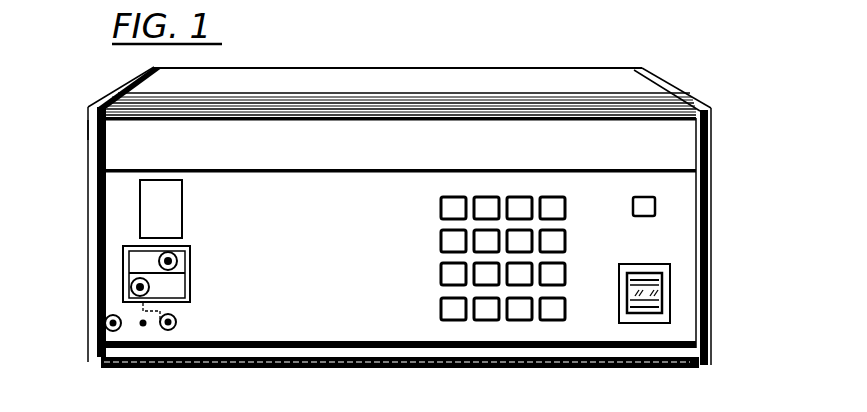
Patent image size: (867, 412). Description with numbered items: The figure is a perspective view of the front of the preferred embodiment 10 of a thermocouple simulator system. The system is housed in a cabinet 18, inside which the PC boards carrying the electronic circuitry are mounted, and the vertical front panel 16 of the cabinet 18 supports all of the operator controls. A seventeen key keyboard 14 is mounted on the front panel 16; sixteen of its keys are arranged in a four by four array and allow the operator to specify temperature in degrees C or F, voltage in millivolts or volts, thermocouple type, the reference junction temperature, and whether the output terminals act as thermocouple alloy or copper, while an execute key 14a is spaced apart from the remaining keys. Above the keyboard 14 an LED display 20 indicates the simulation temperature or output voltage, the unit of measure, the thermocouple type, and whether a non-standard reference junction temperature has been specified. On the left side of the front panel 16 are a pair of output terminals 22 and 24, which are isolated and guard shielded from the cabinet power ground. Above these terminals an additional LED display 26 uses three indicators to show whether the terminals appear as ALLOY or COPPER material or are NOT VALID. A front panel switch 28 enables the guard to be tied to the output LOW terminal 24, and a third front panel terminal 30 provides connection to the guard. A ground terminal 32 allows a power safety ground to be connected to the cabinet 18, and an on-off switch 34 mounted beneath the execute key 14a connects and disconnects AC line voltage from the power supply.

The thermocouple simulator system 10 is at (647, 57).
The keyboard 14 is at (447, 240).
The execute key 14a is at (650, 209).
The front panel 16 is at (330, 276).
The cabinet 18 is at (88, 126).
The LED display 20 is at (346, 140).
The output terminal 22 is at (172, 252).
The output LOW terminal 24 is at (138, 284).
The additional LED display 26 is at (144, 210).
The front panel switch 28 is at (143, 330).
The third front panel terminal 30 is at (176, 330).
The ground terminal 32 is at (106, 330).
The on-off switch 34 is at (660, 283).